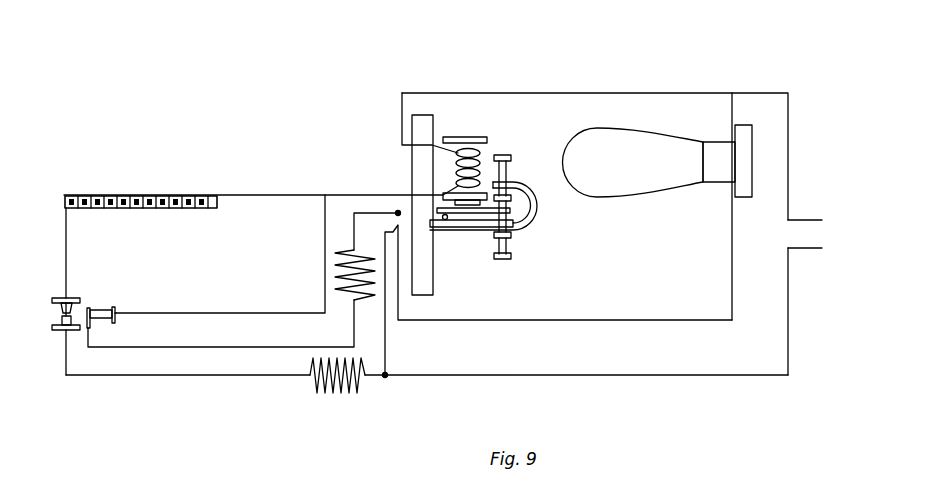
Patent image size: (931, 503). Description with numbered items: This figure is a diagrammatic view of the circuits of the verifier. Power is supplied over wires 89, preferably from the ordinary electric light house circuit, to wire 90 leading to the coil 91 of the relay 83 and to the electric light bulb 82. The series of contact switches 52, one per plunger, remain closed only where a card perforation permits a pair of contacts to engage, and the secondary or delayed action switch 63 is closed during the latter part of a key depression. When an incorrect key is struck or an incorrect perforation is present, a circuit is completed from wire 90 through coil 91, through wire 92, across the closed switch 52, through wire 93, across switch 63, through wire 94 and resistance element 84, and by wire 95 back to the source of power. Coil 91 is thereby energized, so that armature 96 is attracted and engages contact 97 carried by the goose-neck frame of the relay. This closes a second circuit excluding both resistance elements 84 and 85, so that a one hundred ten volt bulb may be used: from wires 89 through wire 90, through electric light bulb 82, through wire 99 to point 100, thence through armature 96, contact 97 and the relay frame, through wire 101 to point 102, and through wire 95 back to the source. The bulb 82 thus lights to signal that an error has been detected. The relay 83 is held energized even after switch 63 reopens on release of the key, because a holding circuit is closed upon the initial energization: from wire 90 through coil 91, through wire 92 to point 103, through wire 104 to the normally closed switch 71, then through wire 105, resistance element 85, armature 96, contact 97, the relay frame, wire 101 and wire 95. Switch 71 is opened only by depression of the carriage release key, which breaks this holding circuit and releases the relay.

The contact switches 52 is at (177, 195).
The secondary or delayed action switch 63 is at (78, 298).
The switch 71 is at (100, 328).
The electric light bulb 82 is at (647, 145).
The relay 83 is at (499, 206).
The resistance element 84 is at (345, 393).
The resistance element 85 is at (345, 250).
The wires 89 is at (813, 224).
The wire 90 is at (753, 93).
The coil 91 is at (476, 153).
The wire 92 is at (385, 193).
The wire 93 is at (66, 247).
The wire 94 is at (223, 375).
The wire 95 is at (637, 357).
The armature 96 is at (503, 156).
The contact 97 is at (505, 200).
The wire 99 is at (732, 255).
The point 100 is at (398, 213).
The wire 101 is at (398, 303).
The point 102 is at (387, 374).
The point 103 is at (325, 195).
The wire 104 is at (325, 261).
The wire 105 is at (260, 332).